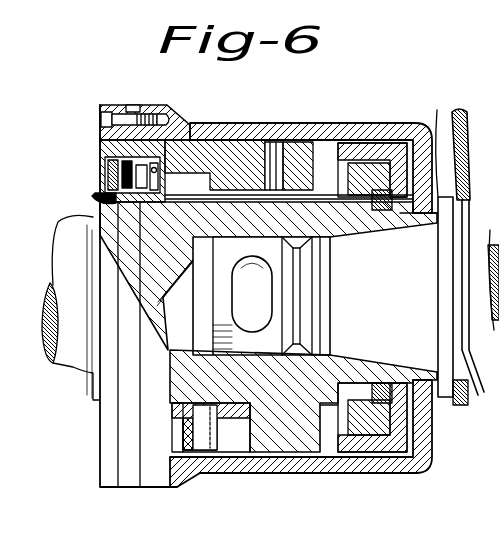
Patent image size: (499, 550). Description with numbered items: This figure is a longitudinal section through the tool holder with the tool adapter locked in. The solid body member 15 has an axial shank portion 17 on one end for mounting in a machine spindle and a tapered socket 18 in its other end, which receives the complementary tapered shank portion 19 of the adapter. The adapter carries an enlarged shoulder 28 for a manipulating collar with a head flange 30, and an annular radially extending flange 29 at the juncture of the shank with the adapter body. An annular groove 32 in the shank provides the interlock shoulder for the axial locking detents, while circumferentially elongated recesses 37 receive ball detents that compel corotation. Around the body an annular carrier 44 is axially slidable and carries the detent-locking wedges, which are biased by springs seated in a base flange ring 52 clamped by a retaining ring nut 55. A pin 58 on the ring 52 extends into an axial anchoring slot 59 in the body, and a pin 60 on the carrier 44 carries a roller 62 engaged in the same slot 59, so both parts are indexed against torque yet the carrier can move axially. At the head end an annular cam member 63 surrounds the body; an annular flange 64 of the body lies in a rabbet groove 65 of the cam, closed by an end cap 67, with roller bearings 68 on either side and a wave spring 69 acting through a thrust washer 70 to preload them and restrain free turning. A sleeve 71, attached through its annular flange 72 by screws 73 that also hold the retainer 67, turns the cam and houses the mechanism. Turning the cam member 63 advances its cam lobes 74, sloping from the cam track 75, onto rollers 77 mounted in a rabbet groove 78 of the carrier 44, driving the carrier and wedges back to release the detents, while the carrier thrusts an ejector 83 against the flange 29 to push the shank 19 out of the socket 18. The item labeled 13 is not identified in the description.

The wheel 13 is at (493, 242).
The body member 15 is at (220, 272).
The axial shank portion 17 is at (58, 222).
The socket 18 is at (362, 232).
The tapered shank portion 19 is at (410, 277).
The shoulder 28 is at (458, 382).
The annular radially extending flange 29 is at (450, 145).
The head flange 30 is at (470, 400).
The annular groove 32 is at (300, 302).
The recesses 37 is at (253, 302).
The annular carrier 44 is at (322, 137).
The base flange ring 52 is at (368, 160).
The retaining ring nut 55 is at (382, 403).
The pin 58 is at (332, 192).
The axial anchoring slot 59 is at (328, 237).
The pin 60 is at (278, 150).
The roller 62 is at (210, 193).
The annular cam member 63 is at (160, 117).
The annular flange 64 is at (120, 160).
The rabbet groove 65 is at (188, 134).
The end cap 67 is at (100, 157).
The roller bearings 68 is at (144, 192).
The wave spring 69 is at (100, 180).
The thrust washer 70 is at (91, 198).
The sleeve 71 is at (252, 130).
The annular flange 72 is at (132, 108).
The screws 73 is at (118, 120).
The cam lobes 74 is at (165, 190).
The cam track 75 is at (175, 412).
The rollers 77 is at (233, 403).
The rabbet groove 78 is at (240, 418).
The ejector 83 is at (403, 450).